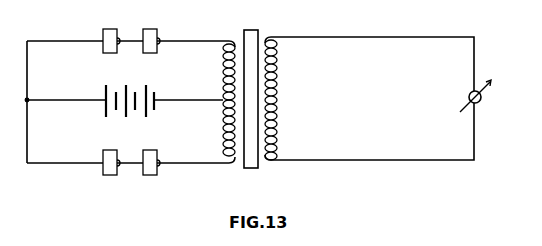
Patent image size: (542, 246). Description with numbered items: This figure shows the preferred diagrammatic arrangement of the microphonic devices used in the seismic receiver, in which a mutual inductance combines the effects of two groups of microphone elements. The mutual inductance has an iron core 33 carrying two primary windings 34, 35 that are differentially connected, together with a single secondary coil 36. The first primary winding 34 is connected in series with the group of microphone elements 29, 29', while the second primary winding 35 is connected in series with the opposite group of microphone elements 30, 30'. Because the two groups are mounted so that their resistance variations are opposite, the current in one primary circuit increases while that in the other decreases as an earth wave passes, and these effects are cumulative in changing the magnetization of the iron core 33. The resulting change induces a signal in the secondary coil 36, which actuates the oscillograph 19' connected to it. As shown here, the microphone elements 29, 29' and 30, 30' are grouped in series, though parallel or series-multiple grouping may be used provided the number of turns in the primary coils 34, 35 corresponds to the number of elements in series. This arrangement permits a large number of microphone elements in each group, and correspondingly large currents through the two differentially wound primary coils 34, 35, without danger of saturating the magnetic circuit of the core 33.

The microphone element 29 is at (110, 31).
The microphone element 29' is at (151, 31).
The microphone element 30 is at (110, 174).
The microphone element 30' is at (151, 174).
The iron core 33 is at (249, 111).
The primary winding 34 is at (217, 72).
The primary winding 35 is at (217, 128).
The secondary coil 36 is at (283, 100).
The oscillograph 19' is at (485, 96).